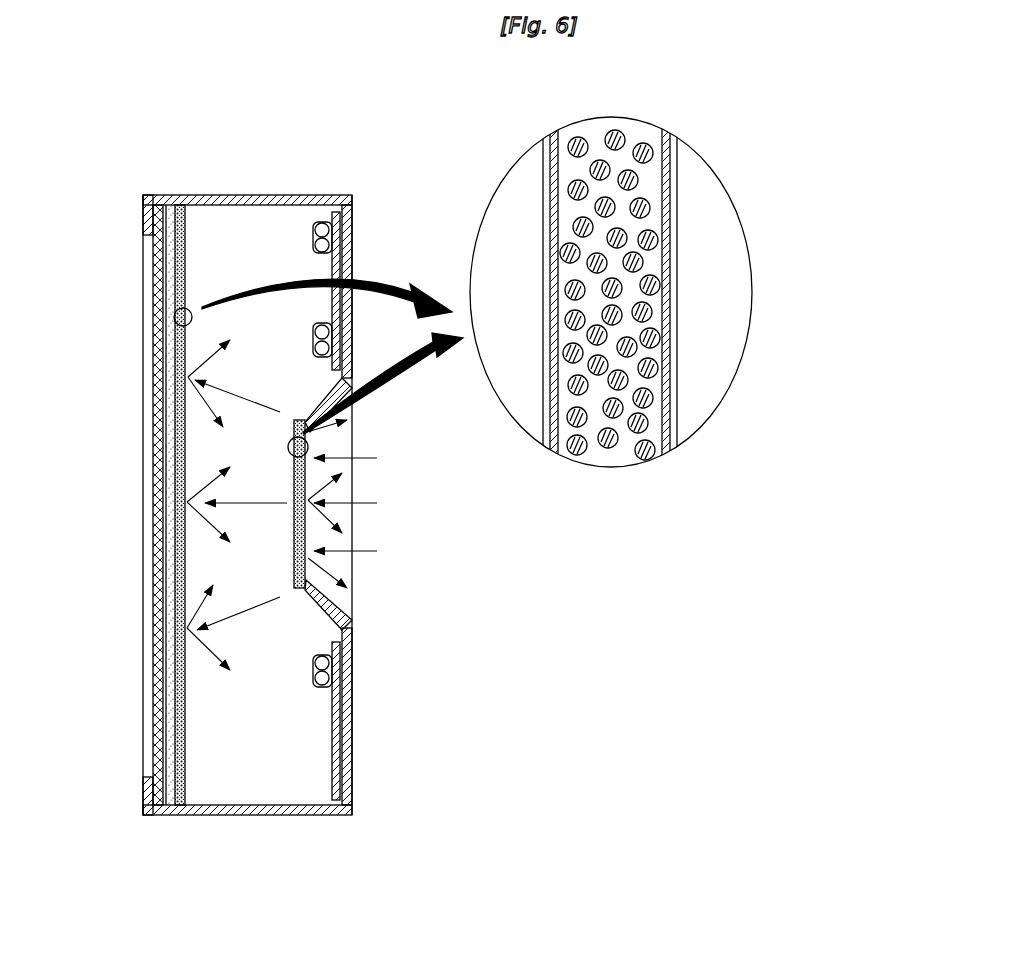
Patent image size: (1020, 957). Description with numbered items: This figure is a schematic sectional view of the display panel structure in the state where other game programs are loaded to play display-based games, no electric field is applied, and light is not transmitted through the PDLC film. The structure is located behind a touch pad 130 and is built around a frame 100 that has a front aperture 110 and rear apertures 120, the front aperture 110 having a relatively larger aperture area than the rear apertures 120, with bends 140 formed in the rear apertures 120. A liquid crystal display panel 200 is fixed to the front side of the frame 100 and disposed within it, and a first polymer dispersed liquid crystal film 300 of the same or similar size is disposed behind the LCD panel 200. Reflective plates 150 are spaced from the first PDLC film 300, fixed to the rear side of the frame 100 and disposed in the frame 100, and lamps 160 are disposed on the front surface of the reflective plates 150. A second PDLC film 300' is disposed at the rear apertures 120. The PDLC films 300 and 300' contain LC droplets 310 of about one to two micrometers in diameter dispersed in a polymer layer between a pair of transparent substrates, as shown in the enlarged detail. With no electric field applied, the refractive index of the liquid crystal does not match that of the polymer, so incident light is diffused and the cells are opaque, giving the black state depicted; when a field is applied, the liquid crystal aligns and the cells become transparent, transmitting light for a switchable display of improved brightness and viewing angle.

The frame 100 is at (243, 184).
The front aperture 110 is at (153, 492).
The rear apertures 120 is at (342, 517).
The touch pad 130 is at (157, 345).
The bends 140 is at (317, 602).
The reflective plates 150 is at (330, 237).
The lamps 160 is at (320, 218).
The liquid crystal display panel 200 is at (170, 197).
The first polymer dispersed liquid crystal film 300 is at (207, 548).
The second polymer dispersed liquid crystal film 300' is at (699, 290).
The LC droplets 310 is at (653, 307).